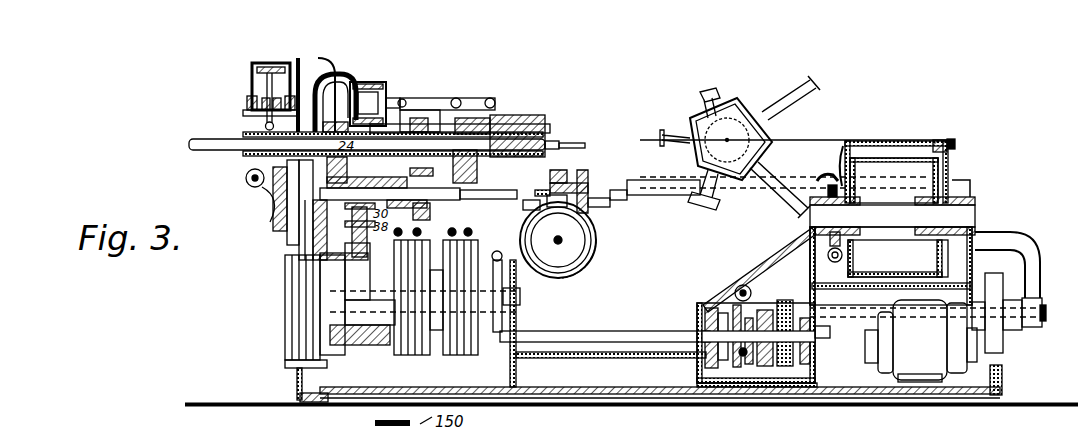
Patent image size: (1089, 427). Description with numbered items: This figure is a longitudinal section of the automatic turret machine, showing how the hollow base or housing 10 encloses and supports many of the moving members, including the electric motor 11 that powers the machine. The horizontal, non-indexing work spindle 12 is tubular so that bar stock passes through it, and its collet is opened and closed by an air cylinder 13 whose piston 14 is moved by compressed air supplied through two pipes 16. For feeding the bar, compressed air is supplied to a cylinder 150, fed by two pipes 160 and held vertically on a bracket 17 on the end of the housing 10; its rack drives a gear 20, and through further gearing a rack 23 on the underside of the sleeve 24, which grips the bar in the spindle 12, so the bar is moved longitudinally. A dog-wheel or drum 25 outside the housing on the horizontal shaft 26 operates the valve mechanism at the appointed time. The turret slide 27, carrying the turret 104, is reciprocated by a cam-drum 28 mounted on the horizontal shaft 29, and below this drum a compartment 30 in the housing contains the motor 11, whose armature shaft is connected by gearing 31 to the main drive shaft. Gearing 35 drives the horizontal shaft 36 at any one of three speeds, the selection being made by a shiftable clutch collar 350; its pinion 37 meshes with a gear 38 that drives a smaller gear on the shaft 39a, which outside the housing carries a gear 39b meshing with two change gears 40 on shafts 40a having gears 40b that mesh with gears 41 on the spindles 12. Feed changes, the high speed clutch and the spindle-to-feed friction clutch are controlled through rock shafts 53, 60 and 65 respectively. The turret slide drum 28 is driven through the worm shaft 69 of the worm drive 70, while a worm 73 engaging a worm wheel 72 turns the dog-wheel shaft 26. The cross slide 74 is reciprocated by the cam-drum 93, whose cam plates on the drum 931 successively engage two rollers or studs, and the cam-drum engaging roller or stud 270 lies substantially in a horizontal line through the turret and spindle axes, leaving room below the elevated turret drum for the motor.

The base or housing 10 is at (659, 229).
The electric motor 11 is at (908, 378).
The work spindle 12 is at (375, 144).
The air cylinder 13 is at (372, 82).
The piston 14 is at (342, 74).
The pipes 16 is at (334, 99).
The bracket 17 is at (265, 198).
The gear 20 is at (246, 178).
The rack 23 is at (240, 158).
The sleeve 24 is at (470, 118).
The dog-wheel or drum 25 is at (285, 313).
The dog-wheel shaft 26 is at (438, 355).
The turret slide 27 is at (840, 146).
The cam-drum 28 is at (896, 158).
The horizontal shaft 29 is at (892, 216).
The compartment 30 is at (952, 303).
The gearing 31 is at (1000, 312).
The gearing 35 is at (743, 352).
The horizontal shaft 36 is at (590, 331).
The pinion 37 is at (360, 345).
The gear 38 is at (385, 330).
The shaft 39a is at (285, 271).
The gear 39b is at (300, 235).
The change gears 40 is at (285, 235).
The shafts 40a is at (418, 179).
The gears 40b is at (430, 210).
The gears 41 is at (430, 110).
The rock shaft 53 is at (368, 251).
The rock shaft 60 is at (433, 232).
The rock shaft 65 is at (472, 232).
The worm shaft 69 is at (891, 266).
The worm drive 70 is at (800, 229).
The worm wheel 72 is at (498, 333).
The worm 73 is at (528, 262).
The cross slide 74 is at (588, 178).
The cam-drum 93 is at (558, 236).
The cam-drum 931 is at (596, 248).
The turret 104 is at (722, 104).
The cylinder 150 is at (252, 87).
The pipes 160 is at (315, 60).
The cam-drum engaging roller or stud 270 is at (942, 140).
The shiftable clutch collar 350 is at (708, 390).